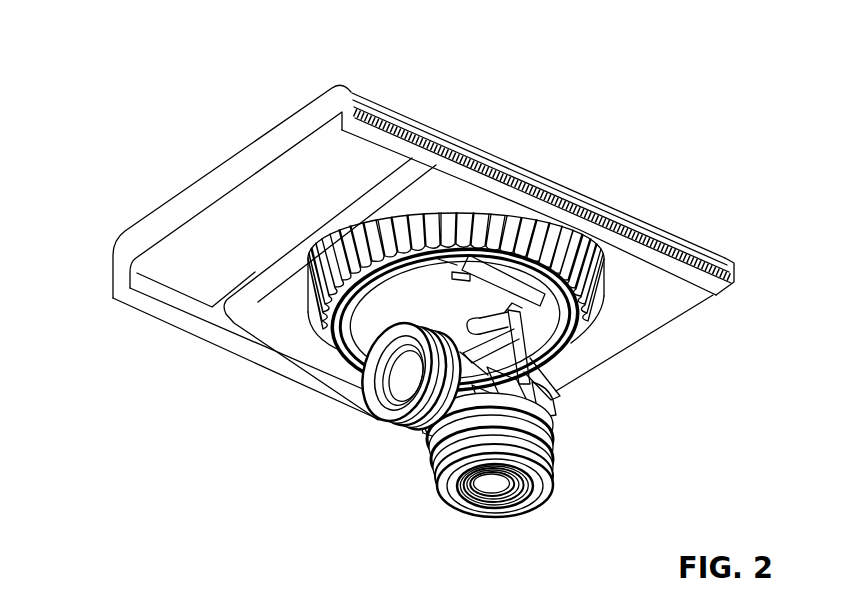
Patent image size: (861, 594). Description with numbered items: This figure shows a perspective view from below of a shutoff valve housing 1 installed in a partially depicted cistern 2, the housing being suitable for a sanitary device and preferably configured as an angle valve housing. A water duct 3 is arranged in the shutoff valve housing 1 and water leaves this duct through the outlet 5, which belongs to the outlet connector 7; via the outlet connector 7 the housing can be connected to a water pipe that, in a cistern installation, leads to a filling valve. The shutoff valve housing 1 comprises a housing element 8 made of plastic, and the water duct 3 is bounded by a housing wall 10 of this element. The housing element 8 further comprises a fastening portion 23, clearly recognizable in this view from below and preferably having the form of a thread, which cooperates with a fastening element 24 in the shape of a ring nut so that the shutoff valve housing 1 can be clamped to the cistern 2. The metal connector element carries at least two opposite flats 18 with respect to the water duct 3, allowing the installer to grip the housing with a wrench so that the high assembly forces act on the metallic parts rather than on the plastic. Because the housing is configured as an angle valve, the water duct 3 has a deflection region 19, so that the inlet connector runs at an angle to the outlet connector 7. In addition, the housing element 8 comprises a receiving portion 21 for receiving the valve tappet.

The shutoff valve housing 1 is at (453, 295).
The cistern 2 is at (368, 130).
The water duct 3 is at (400, 372).
The outlet 5 is at (370, 386).
The outlet connector 7 is at (405, 428).
The housing element 8 is at (535, 377).
The housing wall 10 is at (406, 362).
The flats 18 is at (516, 275).
The deflection region 19 is at (550, 403).
The receiving portion 21 is at (487, 487).
The fastening portion 23 is at (365, 273).
The fastening element 24 is at (335, 290).